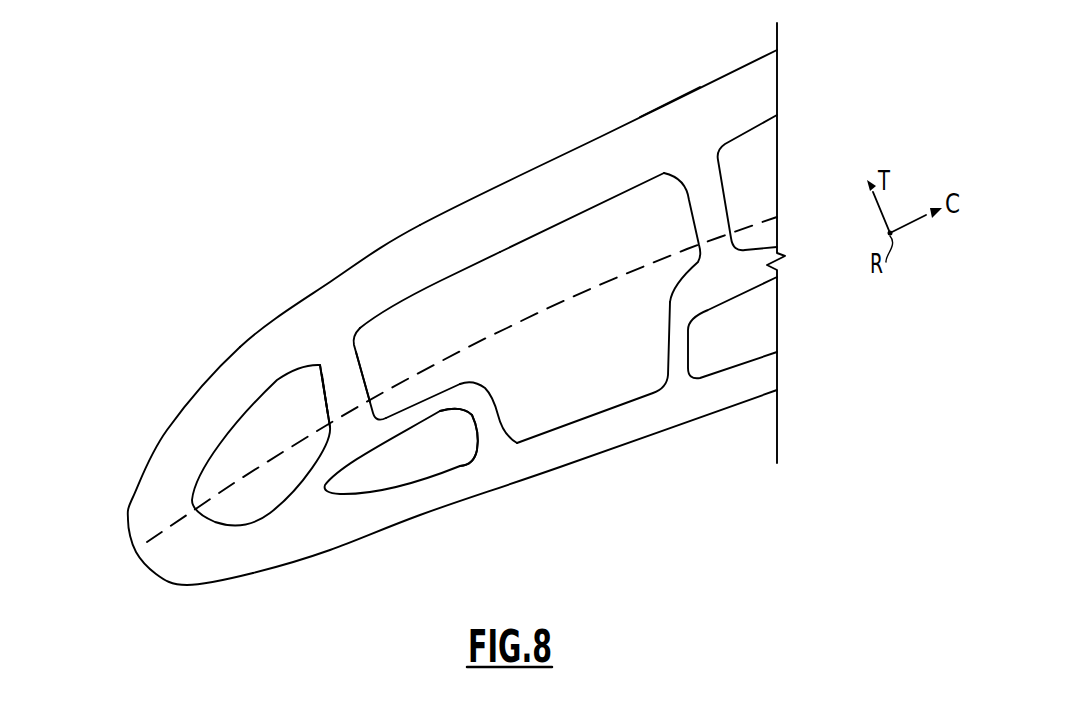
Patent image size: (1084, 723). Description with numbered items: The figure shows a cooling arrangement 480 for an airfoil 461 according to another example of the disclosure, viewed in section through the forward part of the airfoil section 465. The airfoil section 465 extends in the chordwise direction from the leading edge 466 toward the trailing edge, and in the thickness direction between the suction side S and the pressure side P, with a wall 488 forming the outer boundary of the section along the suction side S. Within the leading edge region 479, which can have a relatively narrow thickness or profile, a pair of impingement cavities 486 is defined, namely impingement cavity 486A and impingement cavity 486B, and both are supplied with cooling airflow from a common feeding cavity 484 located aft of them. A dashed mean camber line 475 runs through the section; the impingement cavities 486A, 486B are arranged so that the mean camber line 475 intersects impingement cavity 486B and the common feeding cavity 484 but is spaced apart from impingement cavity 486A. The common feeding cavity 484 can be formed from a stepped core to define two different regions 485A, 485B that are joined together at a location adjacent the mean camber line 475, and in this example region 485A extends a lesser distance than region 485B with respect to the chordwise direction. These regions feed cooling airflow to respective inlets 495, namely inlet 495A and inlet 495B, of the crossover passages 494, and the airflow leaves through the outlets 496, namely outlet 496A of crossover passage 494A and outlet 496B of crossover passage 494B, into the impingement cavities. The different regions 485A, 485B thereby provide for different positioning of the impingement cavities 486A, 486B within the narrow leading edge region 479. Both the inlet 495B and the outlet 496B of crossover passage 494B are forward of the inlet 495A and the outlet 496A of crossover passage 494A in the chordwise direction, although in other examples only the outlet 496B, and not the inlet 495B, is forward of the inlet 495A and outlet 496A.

The airfoil 461 is at (158, 150).
The airfoil section 465 is at (705, 70).
The leading edge 466 is at (142, 548).
The mean camber line 475 is at (748, 228).
The leading edge region 479 is at (268, 306).
The cooling arrangement 480 is at (124, 298).
The common feeding cavity 484 is at (556, 222).
The first region of the common feeding cavity 485A is at (603, 412).
The second region of the common feeding cavity 485B is at (570, 297).
The impingement cavities 486 is at (240, 528).
The first impingement cavity 486A is at (390, 490).
The second impingement cavity 486B is at (261, 445).
The wall 488 is at (412, 263).
The crossover passages 494 is at (483, 440).
The first crossover passage 494A is at (423, 401).
The second crossover passage 494B is at (326, 364).
The inlets 495 is at (497, 410).
The first inlet 495A is at (488, 412).
The second inlet 495B is at (357, 376).
The outlets 496 is at (467, 440).
The first outlet 496A is at (459, 437).
The second outlet 496B is at (323, 396).
The suction side S is at (653, 110).
The pressure side P is at (687, 423).